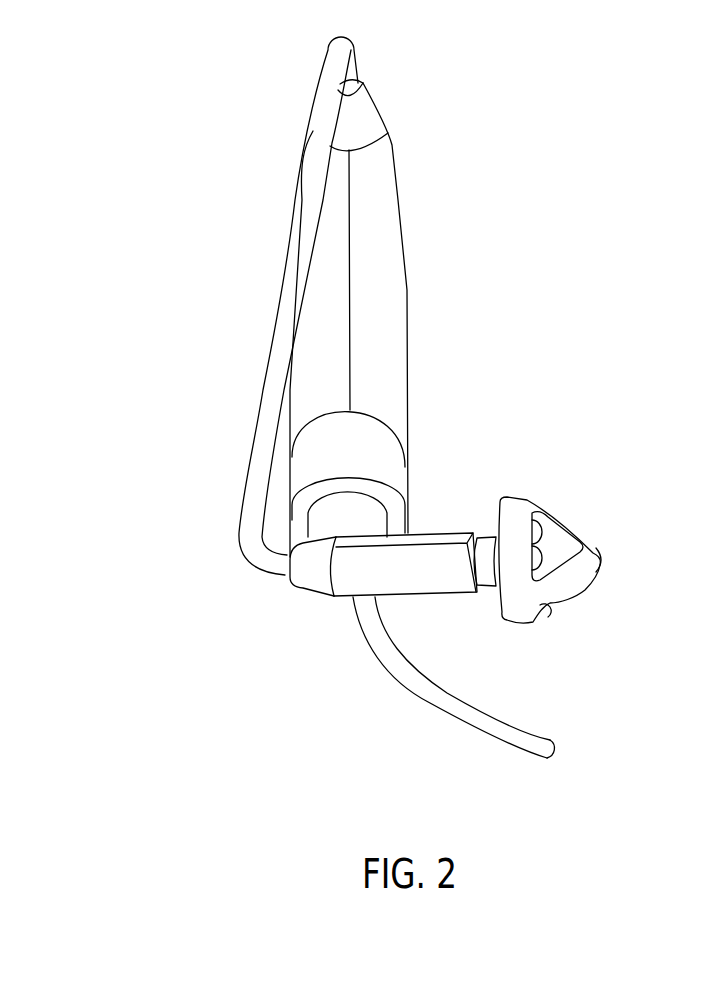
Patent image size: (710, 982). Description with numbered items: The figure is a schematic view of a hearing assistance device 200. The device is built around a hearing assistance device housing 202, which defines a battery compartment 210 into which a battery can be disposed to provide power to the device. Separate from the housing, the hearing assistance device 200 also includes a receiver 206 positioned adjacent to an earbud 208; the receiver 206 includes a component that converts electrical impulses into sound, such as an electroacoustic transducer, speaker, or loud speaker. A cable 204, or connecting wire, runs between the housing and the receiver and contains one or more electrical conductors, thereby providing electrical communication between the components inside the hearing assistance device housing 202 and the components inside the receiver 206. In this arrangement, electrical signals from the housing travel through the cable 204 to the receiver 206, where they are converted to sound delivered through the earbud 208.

The hearing assistance device 200 is at (462, 170).
The hearing assistance device housing 202 is at (385, 289).
The cable 204 is at (293, 317).
The receiver 206 is at (427, 562).
The earbud 208 is at (583, 568).
The battery compartment 210 is at (367, 513).